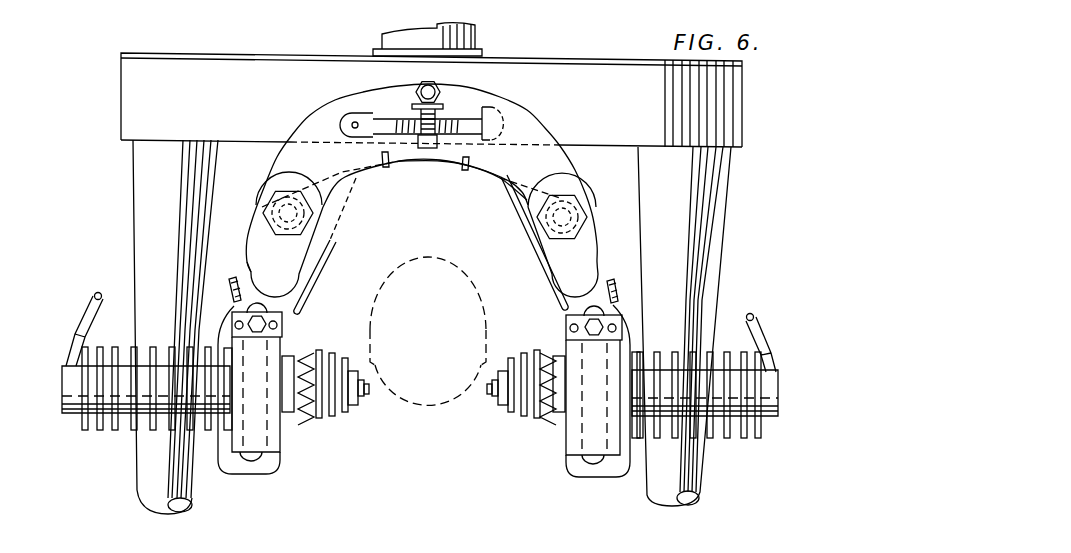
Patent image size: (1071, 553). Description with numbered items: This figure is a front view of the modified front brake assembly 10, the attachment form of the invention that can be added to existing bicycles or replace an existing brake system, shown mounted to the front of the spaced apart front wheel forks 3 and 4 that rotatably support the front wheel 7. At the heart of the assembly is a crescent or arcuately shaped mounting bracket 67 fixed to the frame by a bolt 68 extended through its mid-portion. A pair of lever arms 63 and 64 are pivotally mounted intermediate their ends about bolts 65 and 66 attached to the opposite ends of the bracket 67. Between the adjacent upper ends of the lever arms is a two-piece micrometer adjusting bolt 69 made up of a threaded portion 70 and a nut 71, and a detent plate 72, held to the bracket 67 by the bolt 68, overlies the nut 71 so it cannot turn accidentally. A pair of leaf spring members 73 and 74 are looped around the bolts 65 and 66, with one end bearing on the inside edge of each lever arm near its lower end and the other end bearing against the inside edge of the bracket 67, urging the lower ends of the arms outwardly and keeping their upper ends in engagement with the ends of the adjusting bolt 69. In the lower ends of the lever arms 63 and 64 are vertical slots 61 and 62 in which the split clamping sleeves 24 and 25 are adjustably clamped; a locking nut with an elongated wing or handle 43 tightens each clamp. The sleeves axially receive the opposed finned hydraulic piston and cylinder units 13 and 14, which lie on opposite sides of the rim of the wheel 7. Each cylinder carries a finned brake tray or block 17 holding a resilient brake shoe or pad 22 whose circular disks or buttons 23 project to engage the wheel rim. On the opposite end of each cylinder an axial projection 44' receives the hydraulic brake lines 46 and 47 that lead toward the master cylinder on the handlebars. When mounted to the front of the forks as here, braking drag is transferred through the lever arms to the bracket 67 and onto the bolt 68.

The front brake assembly 10 is at (309, 100).
The front wheel fork 3 is at (713, 200).
The front wheel fork 4 is at (145, 213).
The front wheel 7 is at (432, 253).
The finned hydraulic piston and cylinder unit 13 is at (727, 440).
The finned hydraulic piston and cylinder unit 14 is at (115, 437).
The finned brake tray or block 17 is at (334, 352).
The brake shoe or pad 22 is at (347, 418).
The circular disks or buttons 23 is at (367, 388).
The split clamping cylinder or sleeve 24 is at (573, 442).
The split clamping cylinder or sleeve 25 is at (272, 435).
The elongated wing or handle 43 is at (230, 284).
The axial projection 44' is at (424, 393).
The brake line 46 is at (763, 323).
The brake line 47 is at (88, 313).
The vertical slot 61 is at (588, 465).
The vertical slot 62 is at (248, 461).
The lever arm 63 is at (590, 253).
The lever arm 64 is at (273, 300).
The pivot bolt 65 is at (562, 218).
The pivot bolt 66 is at (320, 212).
The crescent or arcuately shaped mounting plate or bracket 67 is at (483, 100).
The bolt 68 is at (417, 87).
The two-piece micrometer adjusting bolt 69 is at (459, 134).
The threaded portion 70 is at (403, 112).
The nut 71 is at (423, 150).
The detent plate 72 is at (441, 98).
The leaf spring member 73 is at (486, 177).
The leaf spring member 74 is at (385, 169).